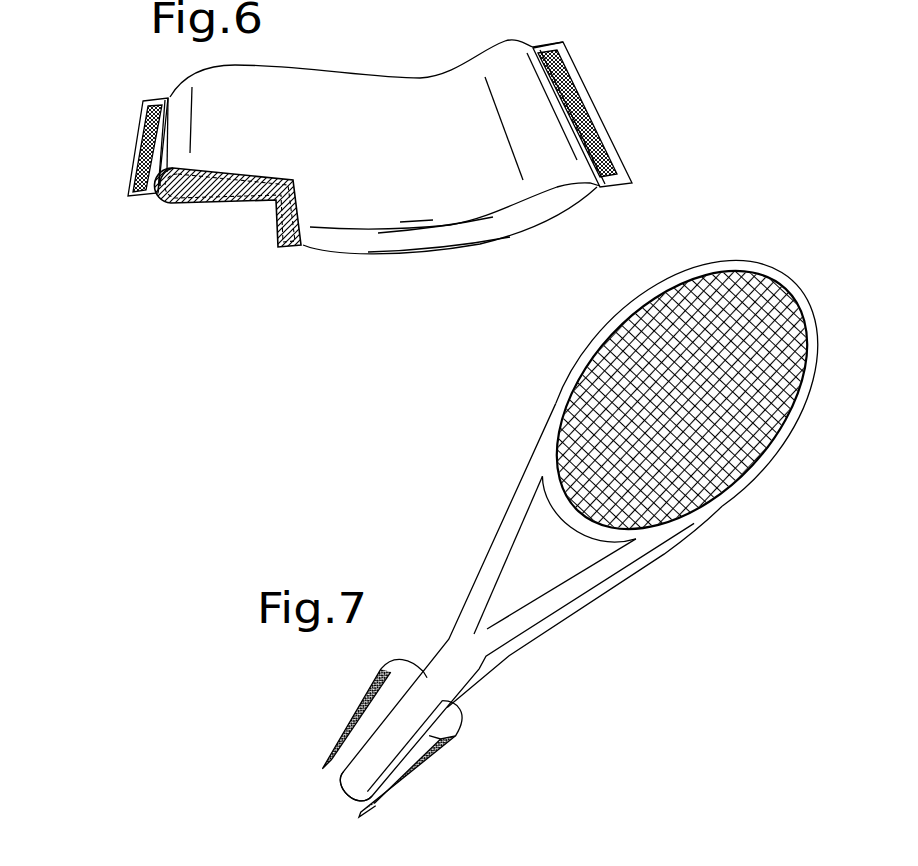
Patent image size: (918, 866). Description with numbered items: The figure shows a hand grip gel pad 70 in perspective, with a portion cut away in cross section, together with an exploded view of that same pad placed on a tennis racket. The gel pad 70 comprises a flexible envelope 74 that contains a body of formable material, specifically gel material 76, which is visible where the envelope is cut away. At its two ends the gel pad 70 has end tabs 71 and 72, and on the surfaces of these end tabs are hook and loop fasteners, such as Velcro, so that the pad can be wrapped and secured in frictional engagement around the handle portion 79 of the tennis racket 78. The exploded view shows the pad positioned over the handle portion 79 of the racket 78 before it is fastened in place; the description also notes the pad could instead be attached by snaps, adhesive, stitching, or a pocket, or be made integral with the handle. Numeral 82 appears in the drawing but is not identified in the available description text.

In FIG. 6, the hand grip gel pad 70 is at (352, 201).
In FIG. 7, the hand grip gel pad 70 is at (327, 722).
In FIG. 6, the end tab 71 is at (592, 120).
In FIG. 6, the end tab 72 is at (143, 157).
In FIG. 6, the flexible envelope 74 is at (243, 172).
In FIG. 6, the gel material 76 is at (208, 193).
In FIG. 7, the tennis racket 78 is at (623, 587).
In FIG. 7, the handle portion 79 is at (343, 782).
In FIG. 7, the racket grip 82 is at (632, 859).